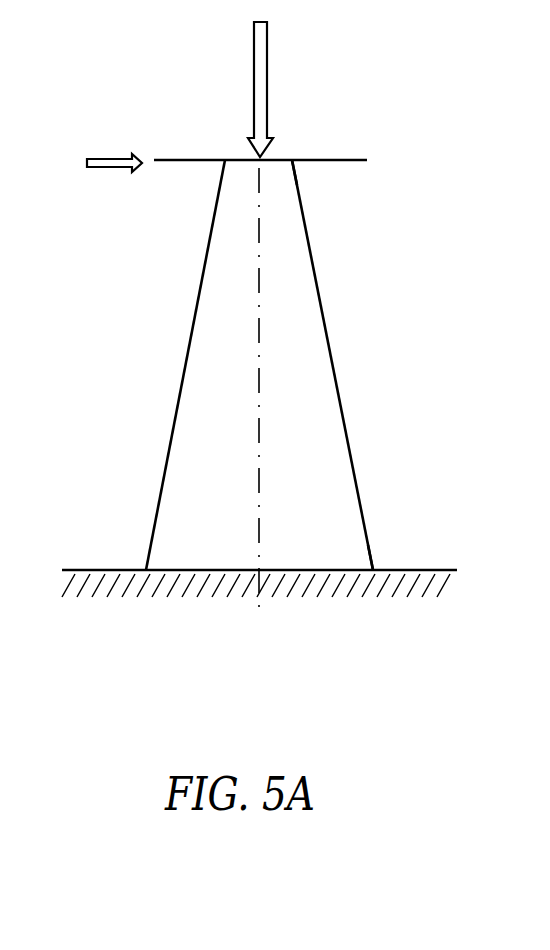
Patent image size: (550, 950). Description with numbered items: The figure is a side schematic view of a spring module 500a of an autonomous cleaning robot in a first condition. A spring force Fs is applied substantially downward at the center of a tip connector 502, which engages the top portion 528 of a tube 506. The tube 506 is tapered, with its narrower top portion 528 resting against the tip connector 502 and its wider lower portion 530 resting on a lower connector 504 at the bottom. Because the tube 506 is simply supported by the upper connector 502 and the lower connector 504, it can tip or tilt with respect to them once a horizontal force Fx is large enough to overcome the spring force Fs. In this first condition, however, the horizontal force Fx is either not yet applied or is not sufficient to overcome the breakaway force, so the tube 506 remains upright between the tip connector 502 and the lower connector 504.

The spring module 500a is at (304, 331).
The tip connector 502 is at (225, 158).
The lower connector 504 is at (375, 577).
The tube 506 is at (318, 372).
The top portion 528 is at (282, 172).
The lower portion 530 is at (357, 557).